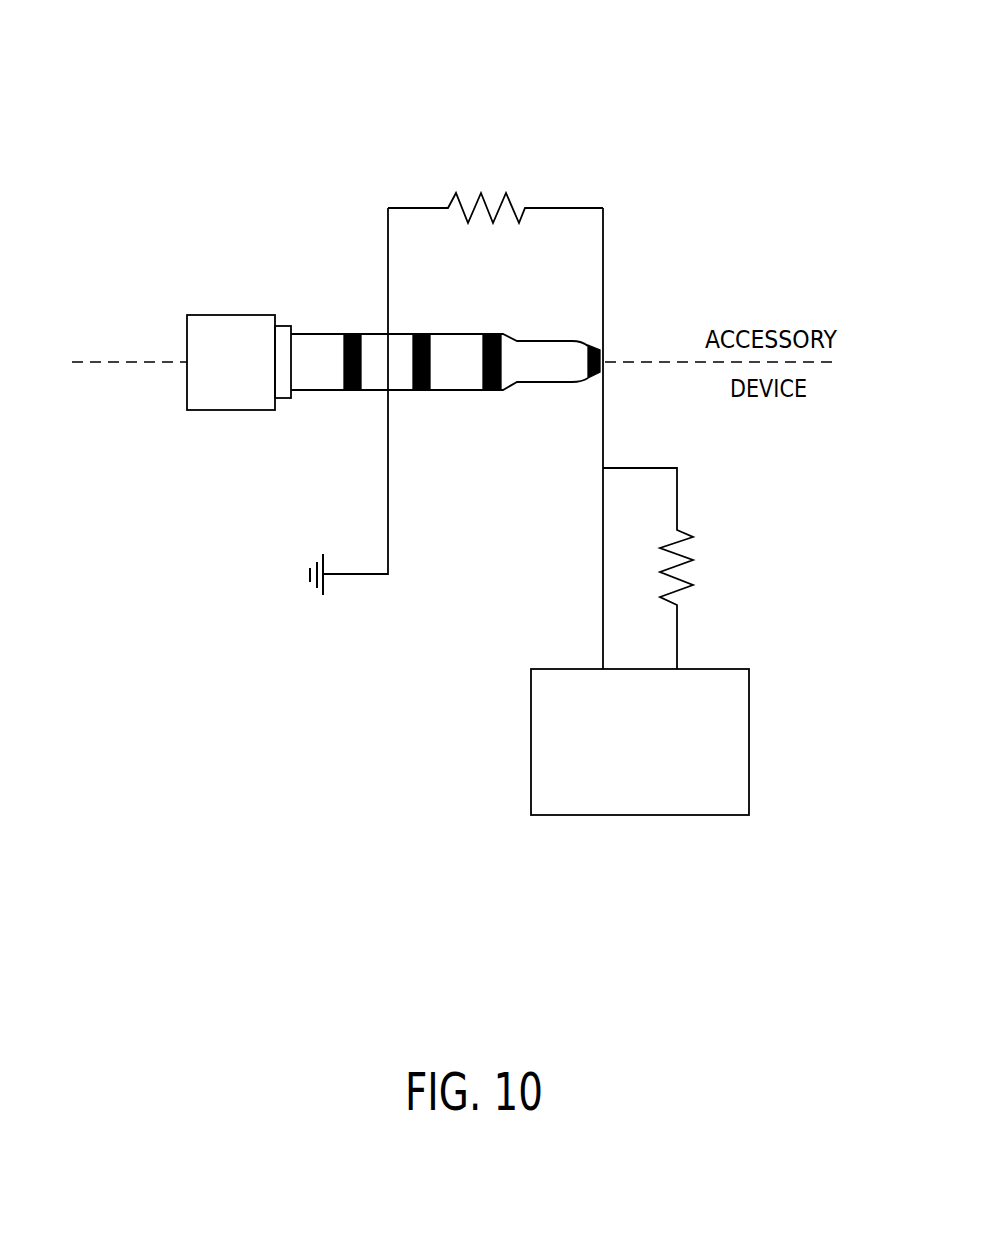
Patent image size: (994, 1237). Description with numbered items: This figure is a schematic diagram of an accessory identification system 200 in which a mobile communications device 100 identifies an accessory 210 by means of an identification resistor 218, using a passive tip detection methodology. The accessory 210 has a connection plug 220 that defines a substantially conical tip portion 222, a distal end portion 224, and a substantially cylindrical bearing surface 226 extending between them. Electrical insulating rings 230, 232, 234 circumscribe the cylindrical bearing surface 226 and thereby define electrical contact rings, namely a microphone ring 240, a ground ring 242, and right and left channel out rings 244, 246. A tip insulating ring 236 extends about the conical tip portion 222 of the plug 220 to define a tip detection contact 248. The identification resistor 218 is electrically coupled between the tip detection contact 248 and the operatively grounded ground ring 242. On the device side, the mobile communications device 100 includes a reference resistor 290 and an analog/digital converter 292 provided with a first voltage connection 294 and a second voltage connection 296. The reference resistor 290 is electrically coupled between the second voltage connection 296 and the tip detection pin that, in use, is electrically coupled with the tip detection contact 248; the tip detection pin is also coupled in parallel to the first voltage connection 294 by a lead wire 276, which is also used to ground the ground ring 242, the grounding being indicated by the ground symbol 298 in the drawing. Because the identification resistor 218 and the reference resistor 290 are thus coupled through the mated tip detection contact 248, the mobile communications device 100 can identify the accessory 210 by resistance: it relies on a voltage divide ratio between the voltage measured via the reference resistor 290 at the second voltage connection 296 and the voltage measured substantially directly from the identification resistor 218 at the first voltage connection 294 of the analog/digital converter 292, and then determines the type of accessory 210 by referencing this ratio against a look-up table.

The mobile communications device 100 is at (237, 533).
The accessory identification system 200 is at (650, 265).
The accessory 210 is at (320, 222).
The identification resistor 218 is at (493, 175).
The connection plug 220 is at (222, 352).
The conical tip portion 222 is at (585, 378).
The distal end portion 224 is at (305, 370).
The cylindrical bearing surface 226 is at (370, 392).
The electrical insulating ring 230 is at (343, 362).
The electrical insulating ring 232 is at (418, 390).
The electrical insulating ring 234 is at (482, 390).
The tip insulating ring 236 is at (588, 347).
The microphone ring 240 is at (315, 355).
The ground ring 242 is at (372, 345).
The right channel out ring 244 is at (462, 345).
The left channel out ring 246 is at (533, 358).
The tip detection contact 248 is at (600, 378).
The lead wire 276 is at (367, 574).
The reference resistor 290 is at (708, 565).
The analog/digital converter 292 is at (637, 757).
The first voltage connection 294 is at (593, 660).
The second voltage connection 296 is at (692, 660).
The ground 298 is at (293, 578).